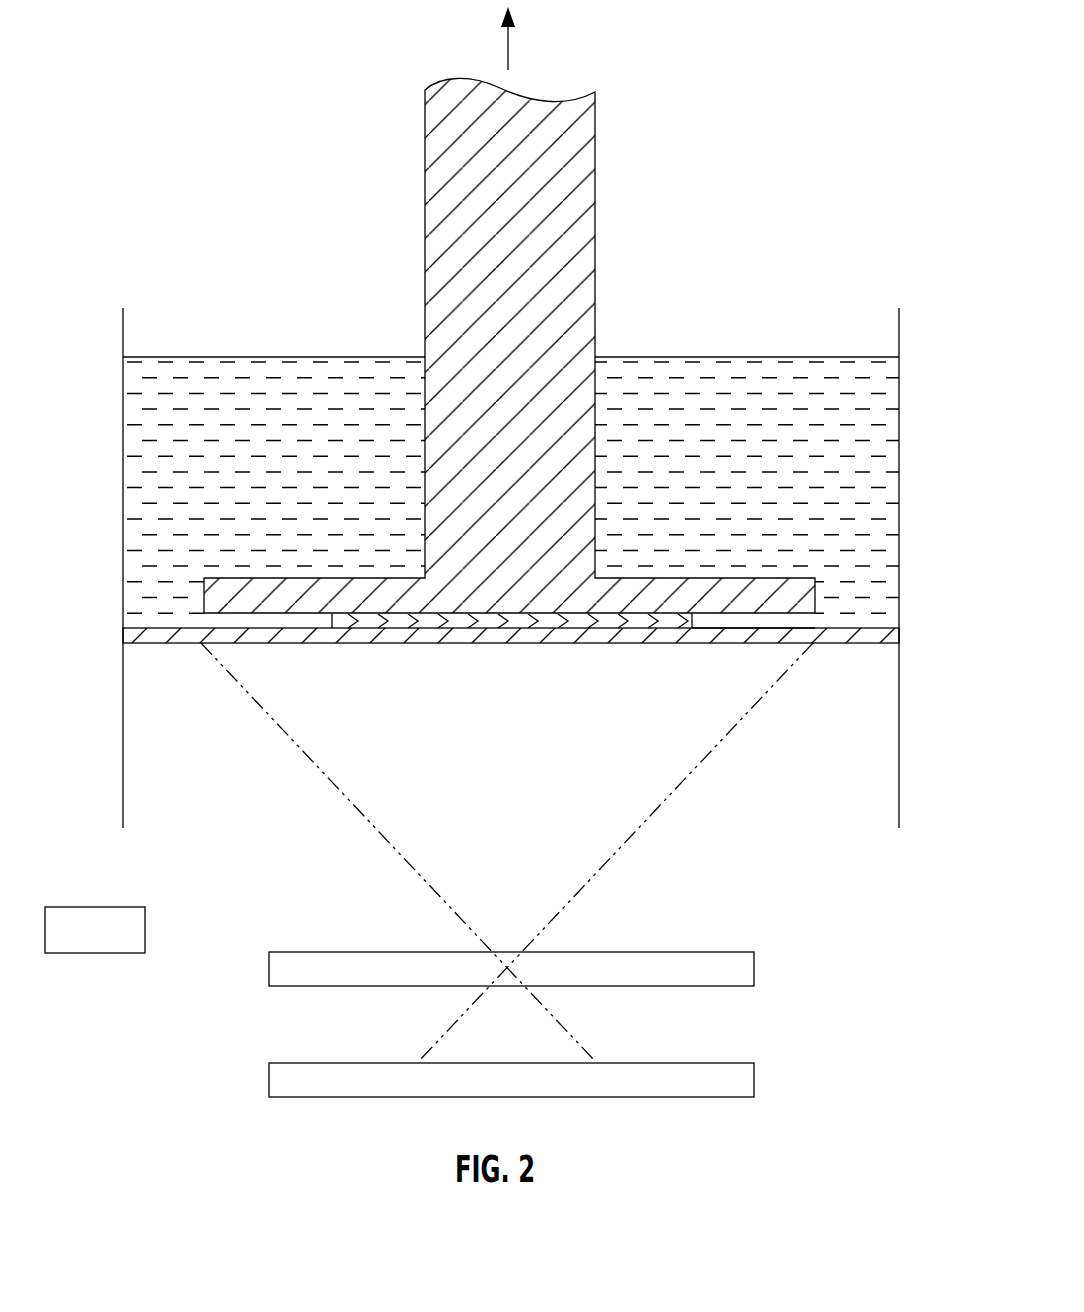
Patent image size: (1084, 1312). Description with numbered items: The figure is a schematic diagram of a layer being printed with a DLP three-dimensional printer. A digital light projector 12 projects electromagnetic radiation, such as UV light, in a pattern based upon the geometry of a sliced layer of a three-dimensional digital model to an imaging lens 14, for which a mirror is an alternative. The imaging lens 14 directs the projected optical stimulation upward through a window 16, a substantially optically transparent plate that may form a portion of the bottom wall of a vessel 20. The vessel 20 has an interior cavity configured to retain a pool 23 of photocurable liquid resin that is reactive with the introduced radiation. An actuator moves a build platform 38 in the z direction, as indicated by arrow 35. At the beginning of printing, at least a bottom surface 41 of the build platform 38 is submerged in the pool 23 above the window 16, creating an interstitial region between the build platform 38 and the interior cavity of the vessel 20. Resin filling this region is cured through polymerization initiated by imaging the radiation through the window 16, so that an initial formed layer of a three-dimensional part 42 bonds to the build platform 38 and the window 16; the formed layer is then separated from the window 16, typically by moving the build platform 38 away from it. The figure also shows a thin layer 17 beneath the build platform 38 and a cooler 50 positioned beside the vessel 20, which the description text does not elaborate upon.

The digital light projector 12 is at (754, 1078).
The imaging lens 14 is at (754, 966).
The window 16 is at (617, 646).
The layer 17 is at (310, 622).
The vessel 20 is at (912, 478).
The pool 23 is at (135, 398).
The arrow 35 is at (505, 45).
The build platform 38 is at (817, 596).
The bottom surface 41 is at (730, 632).
The 3D part 42 is at (428, 620).
The cooler 50 is at (99, 967).